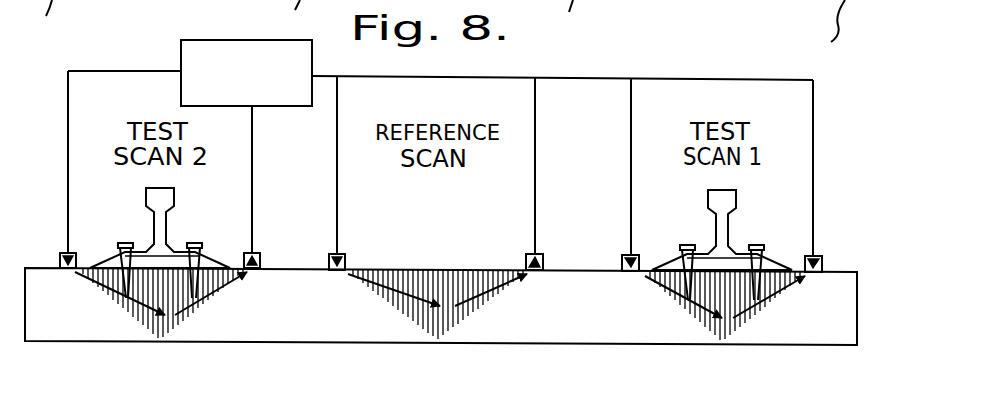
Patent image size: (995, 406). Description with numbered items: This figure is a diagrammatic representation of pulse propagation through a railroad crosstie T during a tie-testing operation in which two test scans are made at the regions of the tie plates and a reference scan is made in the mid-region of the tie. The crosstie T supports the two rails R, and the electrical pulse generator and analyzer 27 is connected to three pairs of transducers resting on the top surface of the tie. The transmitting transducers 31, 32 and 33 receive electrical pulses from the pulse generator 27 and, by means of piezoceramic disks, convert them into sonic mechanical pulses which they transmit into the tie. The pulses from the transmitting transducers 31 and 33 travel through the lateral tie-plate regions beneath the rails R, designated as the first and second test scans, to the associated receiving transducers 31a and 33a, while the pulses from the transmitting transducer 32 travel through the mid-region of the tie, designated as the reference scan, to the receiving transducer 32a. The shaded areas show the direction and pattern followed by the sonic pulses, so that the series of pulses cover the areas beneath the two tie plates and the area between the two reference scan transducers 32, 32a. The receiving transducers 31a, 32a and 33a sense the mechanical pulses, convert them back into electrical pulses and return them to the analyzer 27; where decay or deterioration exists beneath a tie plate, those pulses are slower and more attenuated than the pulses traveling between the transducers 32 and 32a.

The electrical pulse generator and analyzer 27 is at (181, 50).
The transmitting transducer 33 is at (60, 258).
The receiving transducer 33a is at (260, 262).
The transmitting transducer 32 is at (346, 262).
The receiving transducer 32a is at (525, 262).
The transmitting transducer 31 is at (622, 263).
The receiving transducer 31a is at (822, 262).
The rail R is at (172, 201).
The crosstie T is at (296, 280).